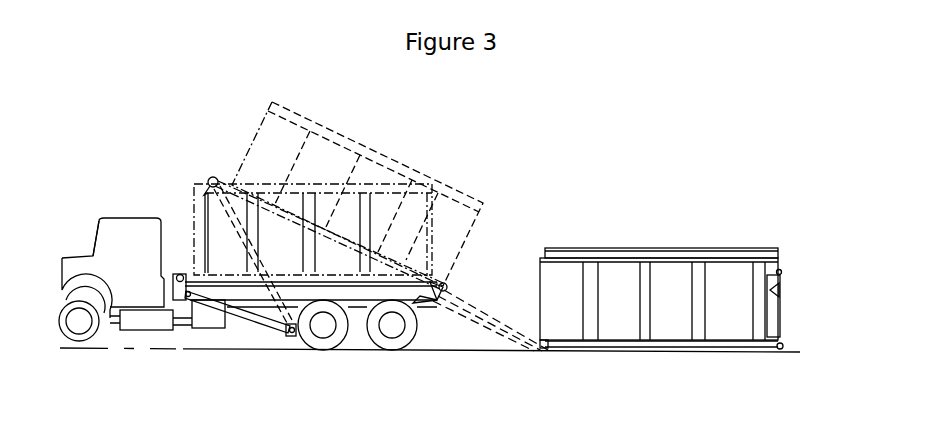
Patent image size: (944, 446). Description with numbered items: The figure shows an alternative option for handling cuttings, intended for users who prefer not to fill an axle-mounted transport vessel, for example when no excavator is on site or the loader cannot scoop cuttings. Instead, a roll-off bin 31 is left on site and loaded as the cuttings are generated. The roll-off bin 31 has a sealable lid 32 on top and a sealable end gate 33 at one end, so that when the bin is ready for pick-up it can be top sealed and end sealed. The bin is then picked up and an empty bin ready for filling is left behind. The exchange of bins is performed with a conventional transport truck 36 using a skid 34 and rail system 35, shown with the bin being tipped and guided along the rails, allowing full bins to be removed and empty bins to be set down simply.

The roll-off bin 31 is at (764, 236).
The sealable lid 32 is at (640, 244).
The sealable end gate 33 is at (771, 290).
The skid 34 is at (597, 355).
The rail system 35 is at (456, 332).
The transport truck 36 is at (140, 166).